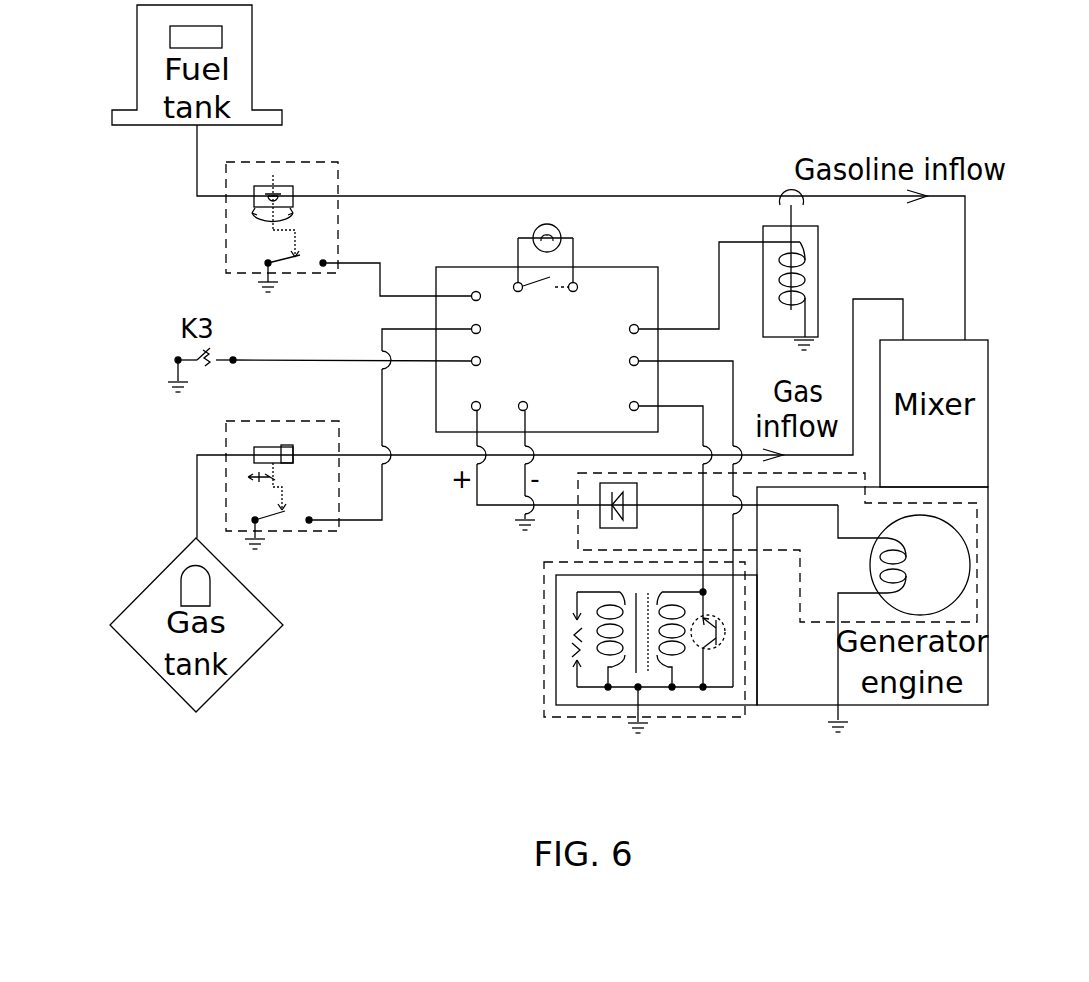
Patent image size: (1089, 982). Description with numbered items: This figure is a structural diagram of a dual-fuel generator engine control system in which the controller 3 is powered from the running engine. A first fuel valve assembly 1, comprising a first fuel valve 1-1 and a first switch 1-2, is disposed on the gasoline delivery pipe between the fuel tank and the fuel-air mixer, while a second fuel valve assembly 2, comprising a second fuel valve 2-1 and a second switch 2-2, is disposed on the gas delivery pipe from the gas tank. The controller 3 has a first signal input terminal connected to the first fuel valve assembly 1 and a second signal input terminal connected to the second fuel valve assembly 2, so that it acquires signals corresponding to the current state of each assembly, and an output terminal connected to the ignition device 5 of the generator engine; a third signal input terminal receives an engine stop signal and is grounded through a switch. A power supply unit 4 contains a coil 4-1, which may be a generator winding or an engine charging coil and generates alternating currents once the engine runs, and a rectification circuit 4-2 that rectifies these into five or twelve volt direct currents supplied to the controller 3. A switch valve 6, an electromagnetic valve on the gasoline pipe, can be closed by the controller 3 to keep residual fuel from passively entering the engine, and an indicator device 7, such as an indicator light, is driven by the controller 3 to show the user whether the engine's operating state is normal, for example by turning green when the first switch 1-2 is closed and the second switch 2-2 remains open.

The first fuel valve assembly 1 is at (235, 246).
The first fuel valve 1-1 is at (287, 197).
The first switch 1-2 is at (303, 258).
The second fuel valve assembly 2 is at (330, 528).
The second fuel valve 2-1 is at (262, 454).
The second switch 2-2 is at (277, 517).
The controller 3 is at (547, 349).
The power supply unit 4 is at (963, 513).
The coil 4-1 is at (913, 555).
The rectification circuit 4-2 is at (600, 522).
The ignition device 5 is at (563, 644).
The switch valve 6 is at (773, 255).
The indicator device 7 is at (553, 225).